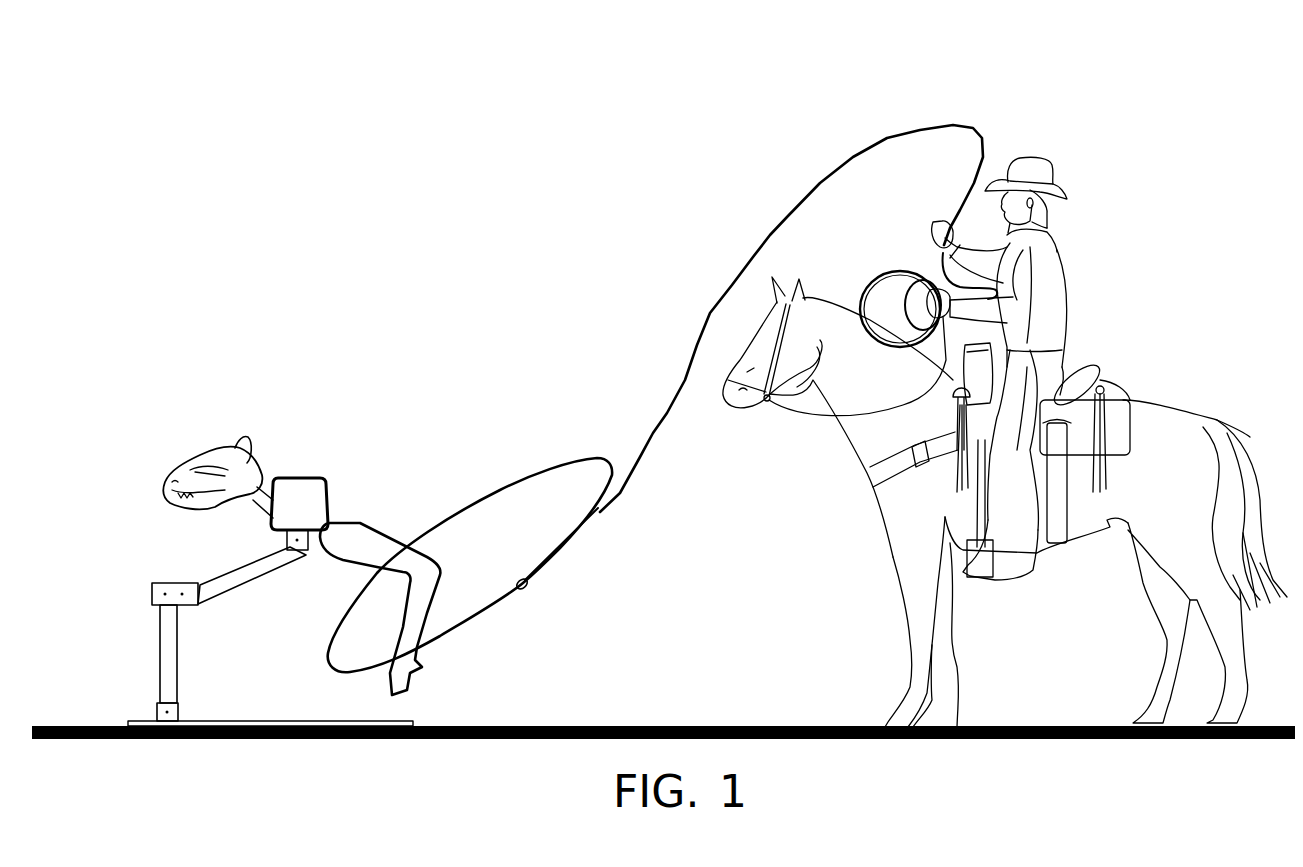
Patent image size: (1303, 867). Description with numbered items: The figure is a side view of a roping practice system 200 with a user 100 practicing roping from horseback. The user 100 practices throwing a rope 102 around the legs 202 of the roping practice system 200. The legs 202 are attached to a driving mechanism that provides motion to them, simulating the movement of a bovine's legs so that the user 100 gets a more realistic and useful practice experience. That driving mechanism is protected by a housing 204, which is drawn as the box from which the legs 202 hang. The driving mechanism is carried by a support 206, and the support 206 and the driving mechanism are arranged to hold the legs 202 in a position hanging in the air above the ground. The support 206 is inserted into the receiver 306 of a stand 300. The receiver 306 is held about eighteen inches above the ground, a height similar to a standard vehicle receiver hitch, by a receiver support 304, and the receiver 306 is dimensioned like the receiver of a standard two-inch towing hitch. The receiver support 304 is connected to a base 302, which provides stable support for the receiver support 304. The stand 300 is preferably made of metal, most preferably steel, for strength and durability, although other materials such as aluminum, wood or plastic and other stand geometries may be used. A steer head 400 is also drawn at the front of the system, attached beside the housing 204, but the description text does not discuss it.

The user 100 is at (1070, 258).
The rope 102 is at (960, 124).
The roping practice system 200 is at (313, 468).
The legs 202 is at (363, 523).
The housing 204 is at (297, 477).
The support 206 is at (214, 606).
The stand 300 is at (153, 672).
The base 302 is at (413, 721).
The receiver support 304 is at (160, 643).
The receiver 306 is at (160, 583).
The steer head 400 is at (165, 462).